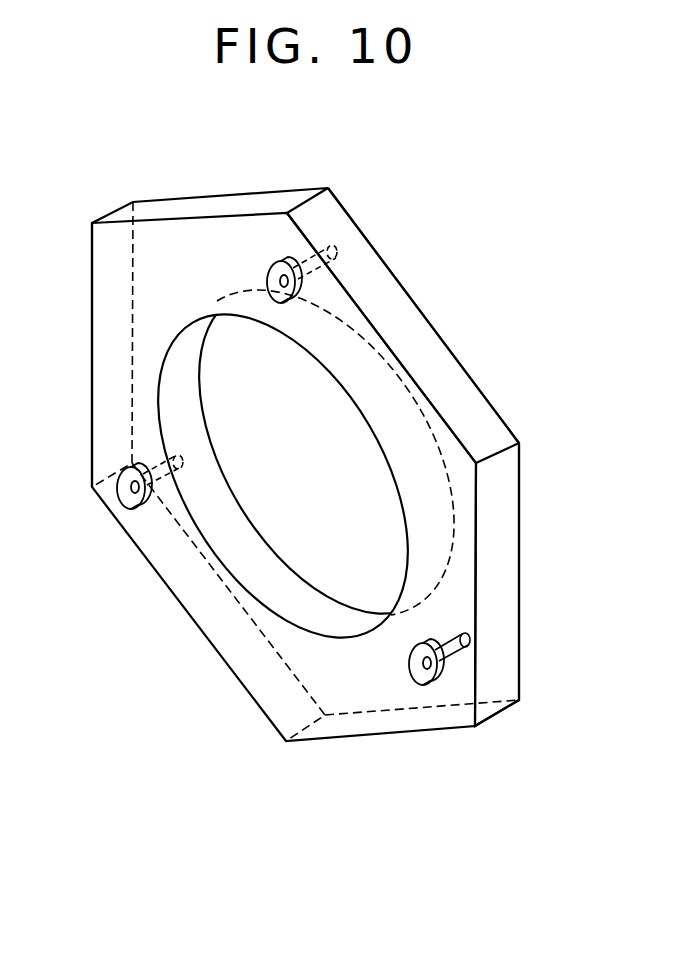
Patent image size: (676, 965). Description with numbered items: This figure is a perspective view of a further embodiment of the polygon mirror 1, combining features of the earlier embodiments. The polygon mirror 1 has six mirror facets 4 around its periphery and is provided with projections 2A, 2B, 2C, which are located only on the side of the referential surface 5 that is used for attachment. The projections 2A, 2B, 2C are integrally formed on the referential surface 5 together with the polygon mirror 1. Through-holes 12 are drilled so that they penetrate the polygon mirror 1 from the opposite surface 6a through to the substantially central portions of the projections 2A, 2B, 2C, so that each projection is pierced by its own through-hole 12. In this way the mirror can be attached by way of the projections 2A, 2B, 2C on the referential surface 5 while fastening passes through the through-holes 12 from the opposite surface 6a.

The polygon mirror 1 is at (300, 620).
The projection 2A is at (118, 506).
The projection 2B is at (420, 688).
The projection 2C is at (273, 263).
The mirror facet 4 is at (475, 405).
The referential surface 5 is at (94, 283).
The opposite surface 6a is at (468, 563).
The through-hole 12 is at (325, 243).